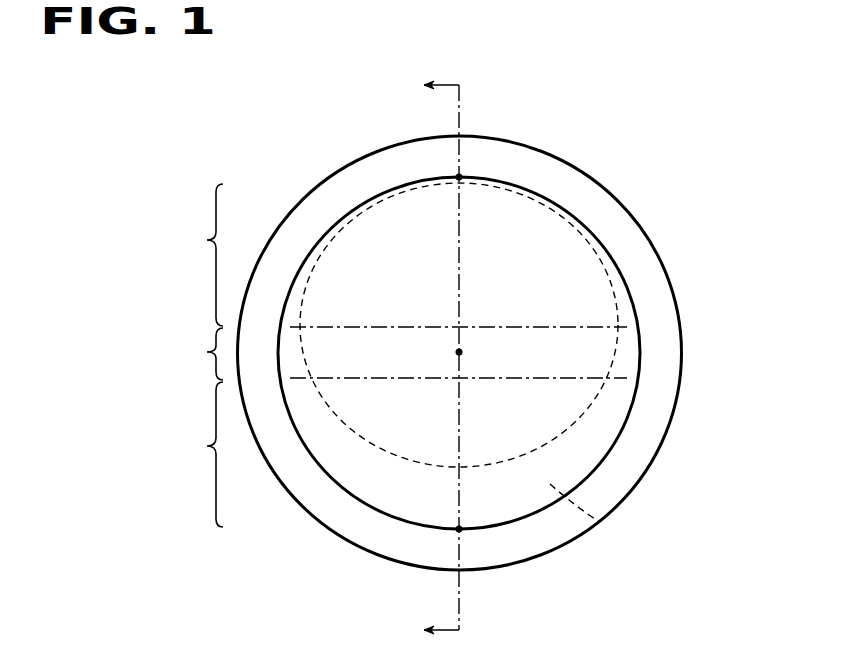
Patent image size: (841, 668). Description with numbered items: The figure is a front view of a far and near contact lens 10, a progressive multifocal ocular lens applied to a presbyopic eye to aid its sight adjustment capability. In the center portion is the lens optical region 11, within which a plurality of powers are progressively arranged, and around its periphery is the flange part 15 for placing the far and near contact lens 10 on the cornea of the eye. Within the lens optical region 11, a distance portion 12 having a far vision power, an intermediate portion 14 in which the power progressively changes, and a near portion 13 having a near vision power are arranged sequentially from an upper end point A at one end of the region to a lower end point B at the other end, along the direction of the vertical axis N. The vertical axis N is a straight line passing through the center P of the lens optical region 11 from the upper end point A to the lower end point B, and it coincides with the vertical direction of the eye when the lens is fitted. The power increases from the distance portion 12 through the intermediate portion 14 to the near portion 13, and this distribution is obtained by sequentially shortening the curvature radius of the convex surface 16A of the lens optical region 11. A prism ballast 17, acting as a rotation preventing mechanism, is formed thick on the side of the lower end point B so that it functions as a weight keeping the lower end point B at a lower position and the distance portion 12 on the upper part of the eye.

The far and near contact lens 10 is at (474, 359).
The lens optical region 11 is at (628, 290).
The distance portion 12 is at (197, 255).
The near portion 13 is at (197, 454).
The intermediate portion 14 is at (197, 354).
The flange part 15 is at (655, 431).
The convex surface 16A is at (410, 430).
The prism ballast 17 is at (600, 522).
The upper end point A is at (463, 175).
The lower end point B is at (465, 535).
The vertical axis N is at (459, 262).
The center P is at (465, 350).